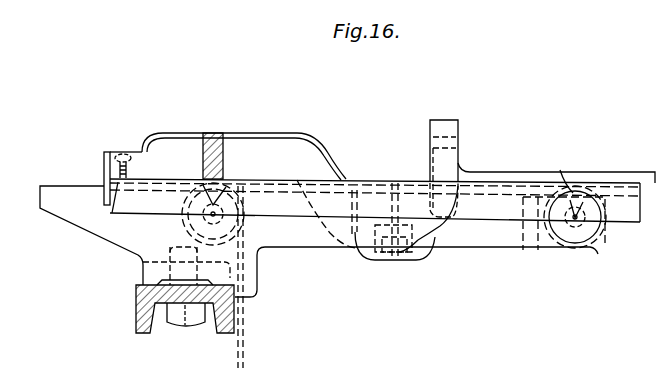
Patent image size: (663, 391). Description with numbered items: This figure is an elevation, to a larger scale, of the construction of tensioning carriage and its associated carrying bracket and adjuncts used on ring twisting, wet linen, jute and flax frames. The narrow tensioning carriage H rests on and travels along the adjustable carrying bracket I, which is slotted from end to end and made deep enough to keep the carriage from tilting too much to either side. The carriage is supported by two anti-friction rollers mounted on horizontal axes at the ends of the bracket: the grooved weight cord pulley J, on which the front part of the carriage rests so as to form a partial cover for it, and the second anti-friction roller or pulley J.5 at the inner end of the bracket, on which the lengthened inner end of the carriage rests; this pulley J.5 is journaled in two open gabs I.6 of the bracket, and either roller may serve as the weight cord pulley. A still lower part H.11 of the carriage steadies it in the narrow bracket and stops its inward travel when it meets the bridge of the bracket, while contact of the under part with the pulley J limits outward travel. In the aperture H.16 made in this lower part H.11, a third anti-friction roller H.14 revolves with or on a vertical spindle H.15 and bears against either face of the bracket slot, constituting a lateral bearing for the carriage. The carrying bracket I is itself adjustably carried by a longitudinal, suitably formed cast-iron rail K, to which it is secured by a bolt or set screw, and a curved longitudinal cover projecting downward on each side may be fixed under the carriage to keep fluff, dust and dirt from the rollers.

The tensioning carriage H is at (496, 156).
The lower part of the tensioning carriage H.11 is at (380, 263).
The third anti-friction roller H.14 is at (368, 250).
The vertical spindle H.15 is at (393, 197).
The aperture / curved longitudinal cover H.16 is at (420, 242).
The adjustable carrying bracket I is at (288, 237).
The open gabs I.6 is at (556, 173).
The grooved weight cord pulley J is at (195, 222).
The second anti-friction roller or pulley J.5 is at (598, 254).
The cast-iron rail K is at (137, 305).